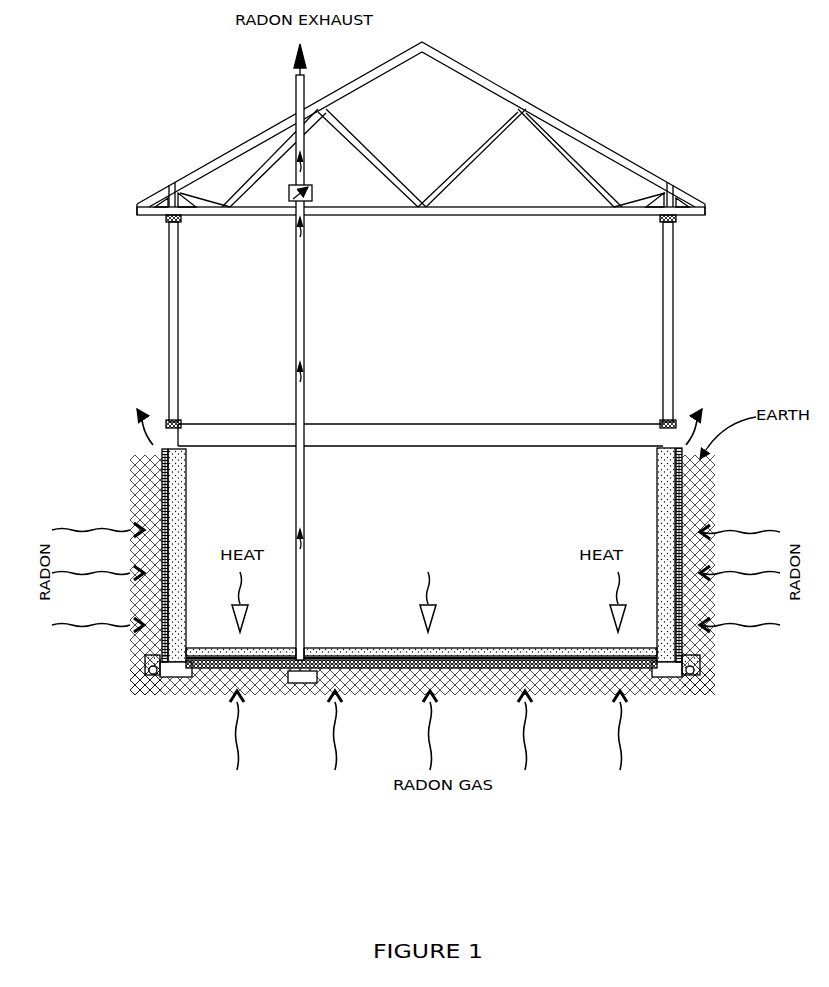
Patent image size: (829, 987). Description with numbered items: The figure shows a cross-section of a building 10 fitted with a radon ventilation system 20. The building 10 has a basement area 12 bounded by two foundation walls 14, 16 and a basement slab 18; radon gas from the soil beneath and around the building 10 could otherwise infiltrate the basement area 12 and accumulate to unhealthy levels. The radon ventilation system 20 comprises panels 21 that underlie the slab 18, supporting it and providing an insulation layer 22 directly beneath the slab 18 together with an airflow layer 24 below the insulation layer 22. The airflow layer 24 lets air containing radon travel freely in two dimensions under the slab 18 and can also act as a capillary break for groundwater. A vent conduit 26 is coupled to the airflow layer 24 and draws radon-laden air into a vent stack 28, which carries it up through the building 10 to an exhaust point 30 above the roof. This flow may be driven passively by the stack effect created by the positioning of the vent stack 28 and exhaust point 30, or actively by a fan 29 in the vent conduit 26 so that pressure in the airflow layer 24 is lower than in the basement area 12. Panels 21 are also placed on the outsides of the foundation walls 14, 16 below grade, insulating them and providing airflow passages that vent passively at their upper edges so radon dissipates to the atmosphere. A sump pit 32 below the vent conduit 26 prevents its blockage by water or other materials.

The building 10 is at (487, 78).
The basement area 12 is at (379, 486).
The foundation wall 14 is at (181, 513).
The foundation wall 16 is at (665, 512).
The basement slab 18 is at (487, 648).
The radon ventilation system 20 is at (101, 302).
The panels 21 is at (160, 474).
The insulation layer 22 is at (164, 522).
The airflow layer 24 is at (164, 630).
The vent conduit 26 is at (302, 658).
The vent stack 28 is at (302, 345).
The fan 29 is at (308, 191).
The exhaust point 30 is at (308, 67).
The sump pit 32 is at (304, 685).